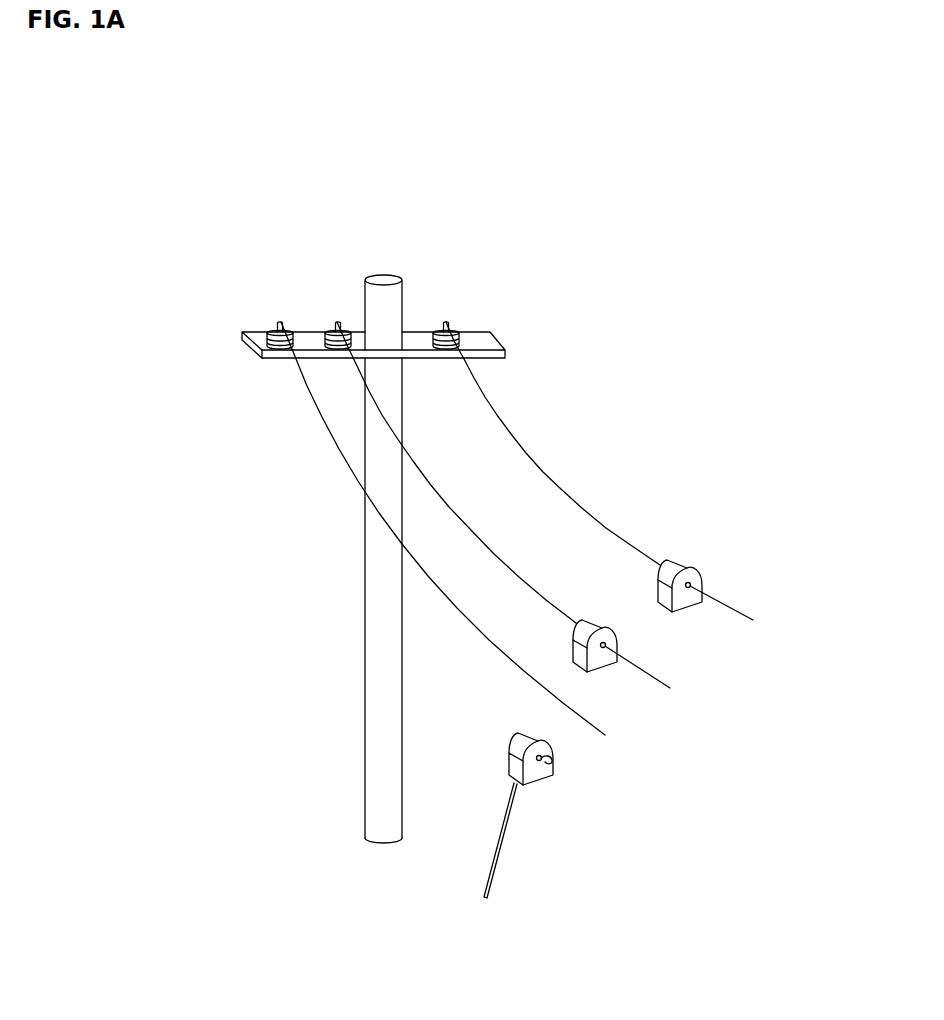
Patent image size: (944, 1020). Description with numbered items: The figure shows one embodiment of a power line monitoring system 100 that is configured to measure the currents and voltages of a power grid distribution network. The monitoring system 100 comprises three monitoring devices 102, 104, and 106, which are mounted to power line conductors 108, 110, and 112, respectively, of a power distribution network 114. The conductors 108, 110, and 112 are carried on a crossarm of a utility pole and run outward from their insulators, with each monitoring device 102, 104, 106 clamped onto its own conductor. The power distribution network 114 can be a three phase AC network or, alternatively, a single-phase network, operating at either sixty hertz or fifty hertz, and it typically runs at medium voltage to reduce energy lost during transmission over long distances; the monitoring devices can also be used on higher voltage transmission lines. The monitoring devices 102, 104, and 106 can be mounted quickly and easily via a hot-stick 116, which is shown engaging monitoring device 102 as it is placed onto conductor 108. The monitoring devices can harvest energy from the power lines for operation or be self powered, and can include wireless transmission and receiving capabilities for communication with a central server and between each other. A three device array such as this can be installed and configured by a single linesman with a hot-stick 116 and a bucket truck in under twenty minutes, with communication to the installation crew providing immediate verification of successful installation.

The monitoring system 100 is at (722, 494).
The monitoring device 102 is at (552, 773).
The monitoring device 104 is at (593, 662).
The monitoring device 106 is at (679, 605).
The power line conductor 108 is at (477, 634).
The power line conductor 110 is at (498, 553).
The power line conductor 112 is at (542, 465).
The power distribution network 114 is at (199, 356).
The hot-stick 116 is at (503, 845).